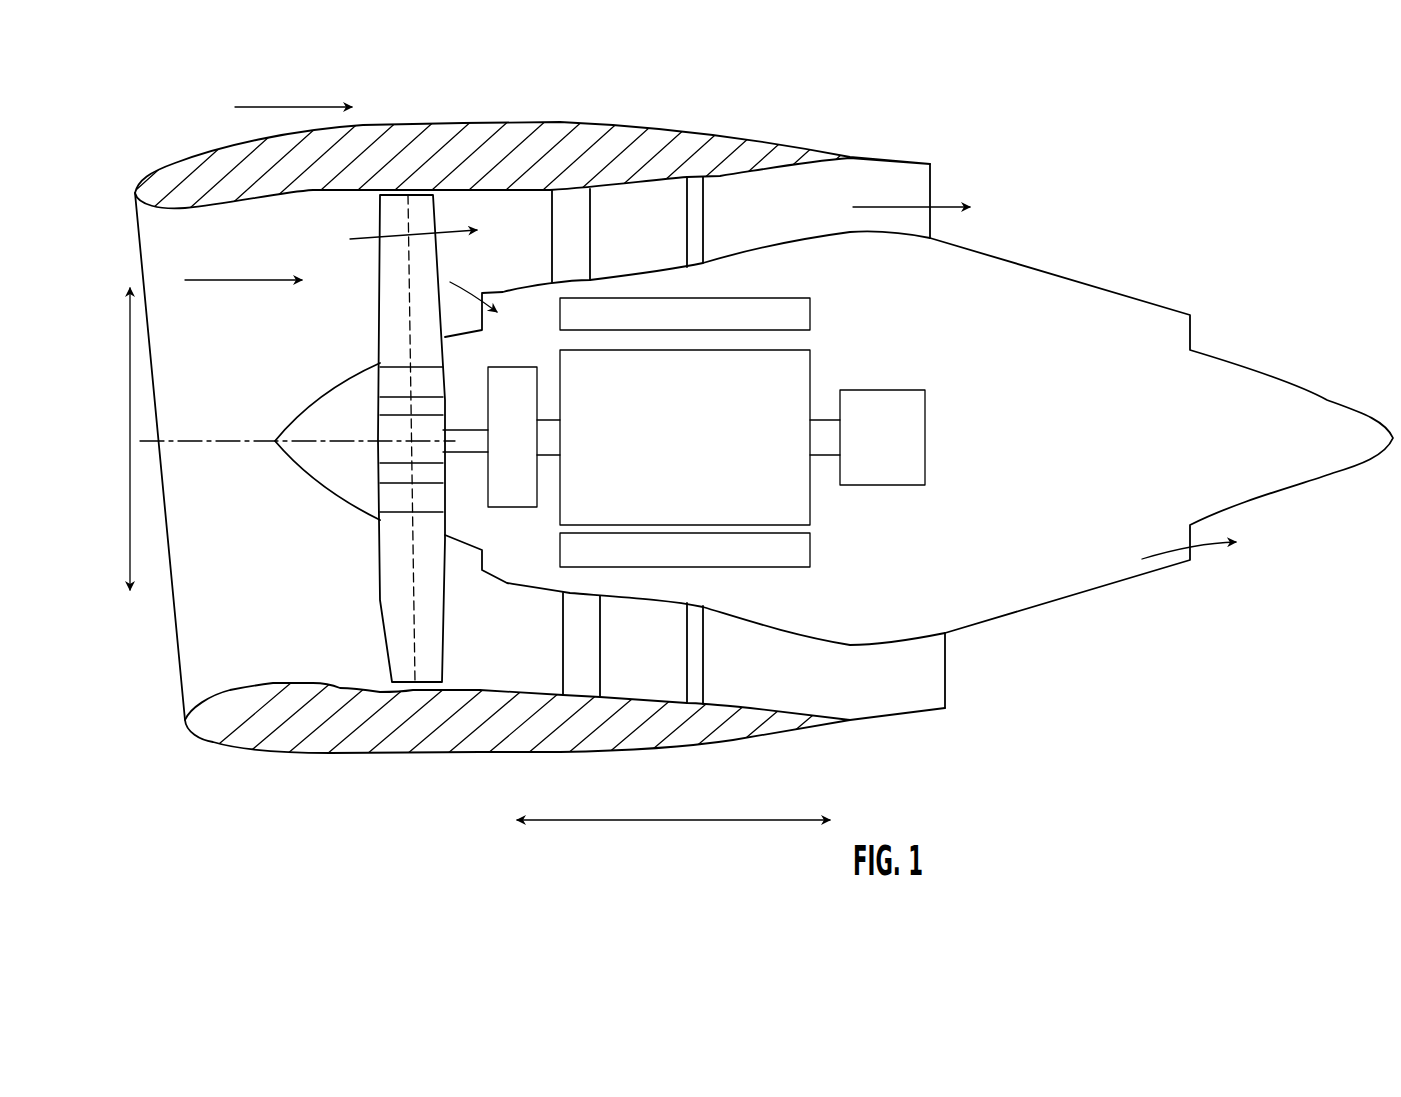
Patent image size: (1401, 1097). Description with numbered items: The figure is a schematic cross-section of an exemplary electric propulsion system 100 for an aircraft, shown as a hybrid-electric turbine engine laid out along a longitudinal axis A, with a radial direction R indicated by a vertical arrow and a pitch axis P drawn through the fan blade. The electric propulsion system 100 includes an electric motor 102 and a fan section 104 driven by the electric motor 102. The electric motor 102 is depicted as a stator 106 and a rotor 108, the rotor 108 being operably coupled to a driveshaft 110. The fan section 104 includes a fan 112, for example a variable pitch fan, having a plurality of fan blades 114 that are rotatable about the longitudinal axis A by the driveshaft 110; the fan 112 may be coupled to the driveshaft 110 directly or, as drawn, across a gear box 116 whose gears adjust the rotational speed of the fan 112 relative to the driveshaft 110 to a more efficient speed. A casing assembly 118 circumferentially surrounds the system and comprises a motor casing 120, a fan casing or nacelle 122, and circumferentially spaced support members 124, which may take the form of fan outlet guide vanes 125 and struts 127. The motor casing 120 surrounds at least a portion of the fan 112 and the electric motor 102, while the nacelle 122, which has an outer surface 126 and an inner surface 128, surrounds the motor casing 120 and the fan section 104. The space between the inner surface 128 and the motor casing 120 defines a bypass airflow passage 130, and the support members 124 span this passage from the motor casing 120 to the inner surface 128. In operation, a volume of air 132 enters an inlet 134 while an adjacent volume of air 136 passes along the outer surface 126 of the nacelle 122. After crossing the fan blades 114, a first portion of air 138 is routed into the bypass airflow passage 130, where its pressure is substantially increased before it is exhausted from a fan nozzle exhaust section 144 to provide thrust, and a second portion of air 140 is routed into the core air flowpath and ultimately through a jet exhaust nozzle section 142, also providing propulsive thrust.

The electric propulsion system 100 is at (1132, 133).
The electric motor 102 is at (919, 438).
The fan section 104 is at (277, 215).
The stator 106 is at (811, 310).
The rotor 108 is at (811, 362).
The driveshaft 110 is at (552, 457).
The fan 112 is at (337, 503).
The fan blades 114 is at (378, 377).
The gear box 116 is at (510, 367).
The casing assembly 118 is at (564, 432).
The motor casing 120 is at (919, 438).
The nacelle 122 is at (564, 460).
The support members 124 is at (608, 195).
The fan outlet guide vanes 125 is at (590, 228).
The outer surface 126 is at (564, 443).
The struts 127 is at (687, 197).
The inner surface 128 is at (564, 460).
The bypass airflow passage 130 is at (742, 210).
The volume of air 132 is at (240, 280).
The inlet 134 is at (564, 430).
The adjacent volume of air 136 is at (300, 106).
The first portion of air 138 is at (397, 233).
The second portion of air 140 is at (466, 298).
The jet exhaust nozzle section 142 is at (1192, 337).
The fan nozzle exhaust section 144 is at (928, 187).
The pitch axis P is at (412, 203).
The radial direction R is at (130, 420).
The longitudinal axis A is at (672, 820).